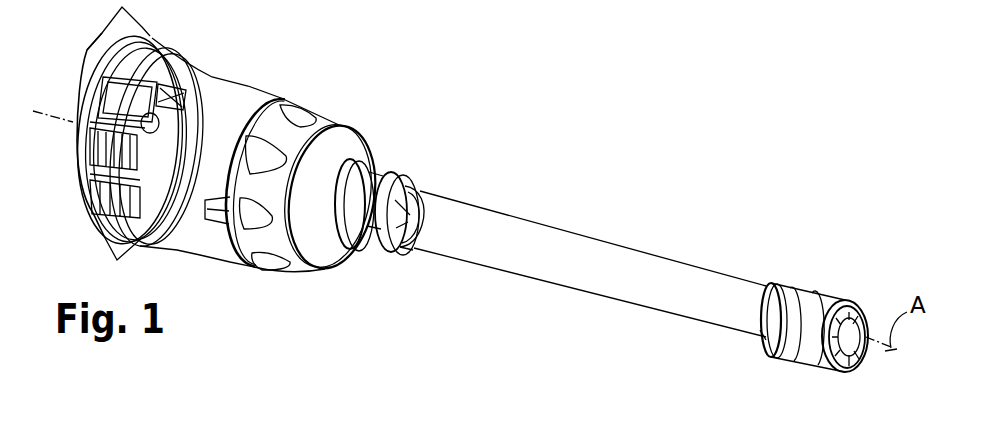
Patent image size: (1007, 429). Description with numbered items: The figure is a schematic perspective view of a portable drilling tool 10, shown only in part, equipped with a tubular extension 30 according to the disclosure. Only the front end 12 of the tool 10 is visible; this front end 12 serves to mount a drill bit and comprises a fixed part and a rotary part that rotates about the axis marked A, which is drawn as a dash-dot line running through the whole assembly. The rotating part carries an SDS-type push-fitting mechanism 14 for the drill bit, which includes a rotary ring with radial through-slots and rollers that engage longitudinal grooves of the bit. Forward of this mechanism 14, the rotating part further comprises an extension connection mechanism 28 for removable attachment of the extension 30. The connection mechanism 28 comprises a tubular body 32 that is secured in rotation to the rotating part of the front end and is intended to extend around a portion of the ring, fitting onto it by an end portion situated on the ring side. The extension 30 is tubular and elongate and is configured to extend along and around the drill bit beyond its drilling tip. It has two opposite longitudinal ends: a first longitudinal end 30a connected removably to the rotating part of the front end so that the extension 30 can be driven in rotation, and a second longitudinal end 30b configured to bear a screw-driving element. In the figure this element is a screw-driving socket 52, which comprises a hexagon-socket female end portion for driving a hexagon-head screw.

The drilling tool 10 is at (553, 110).
The front end 12 is at (277, 78).
The SDS-type mechanism 14 is at (288, 130).
The extension connection mechanism 28 is at (393, 170).
The tubular body 32 is at (427, 180).
The extension 30 is at (595, 257).
The first longitudinal end 30a is at (413, 253).
The second longitudinal end 30b is at (767, 353).
The screw-driving socket 52 is at (798, 285).